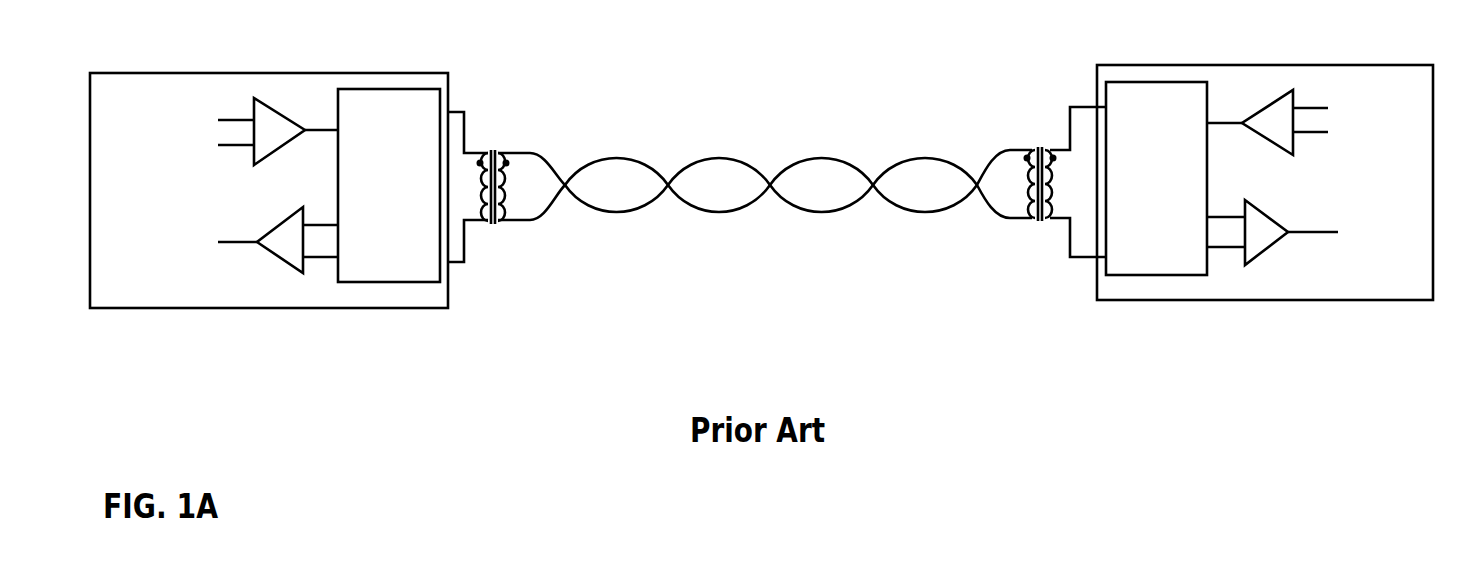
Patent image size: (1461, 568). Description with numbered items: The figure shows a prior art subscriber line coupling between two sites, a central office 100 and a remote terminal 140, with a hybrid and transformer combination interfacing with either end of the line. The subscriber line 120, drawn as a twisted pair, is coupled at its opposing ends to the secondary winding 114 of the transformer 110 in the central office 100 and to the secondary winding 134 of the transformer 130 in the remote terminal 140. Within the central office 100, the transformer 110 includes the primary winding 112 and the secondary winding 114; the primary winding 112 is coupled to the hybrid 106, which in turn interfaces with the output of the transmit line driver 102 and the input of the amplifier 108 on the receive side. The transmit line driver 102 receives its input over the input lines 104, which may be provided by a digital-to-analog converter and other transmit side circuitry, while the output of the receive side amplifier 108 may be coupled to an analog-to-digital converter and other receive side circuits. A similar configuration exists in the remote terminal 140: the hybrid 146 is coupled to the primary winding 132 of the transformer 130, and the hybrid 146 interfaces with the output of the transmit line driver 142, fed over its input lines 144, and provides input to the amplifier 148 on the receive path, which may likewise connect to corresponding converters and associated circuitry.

The central office 100 is at (215, 73).
The transmit line driver 102 is at (277, 108).
The transmitter input lines 104 is at (253, 118).
The hybrid 106 is at (343, 157).
The amplifier 108 is at (293, 212).
The transformer 110 is at (529, 181).
The primary winding 112 is at (488, 224).
The secondary winding 114 is at (500, 222).
The subscriber line 120 is at (722, 158).
The transformer 130 is at (1010, 178).
The primary winding 132 is at (1046, 219).
The secondary winding 134 is at (1033, 219).
The remote terminal 140 is at (1330, 65).
The transmit line driver 142 is at (1283, 100).
The transmitter input lines 144 is at (1297, 112).
The hybrid 146 is at (1197, 152).
The amplifier 148 is at (1262, 210).